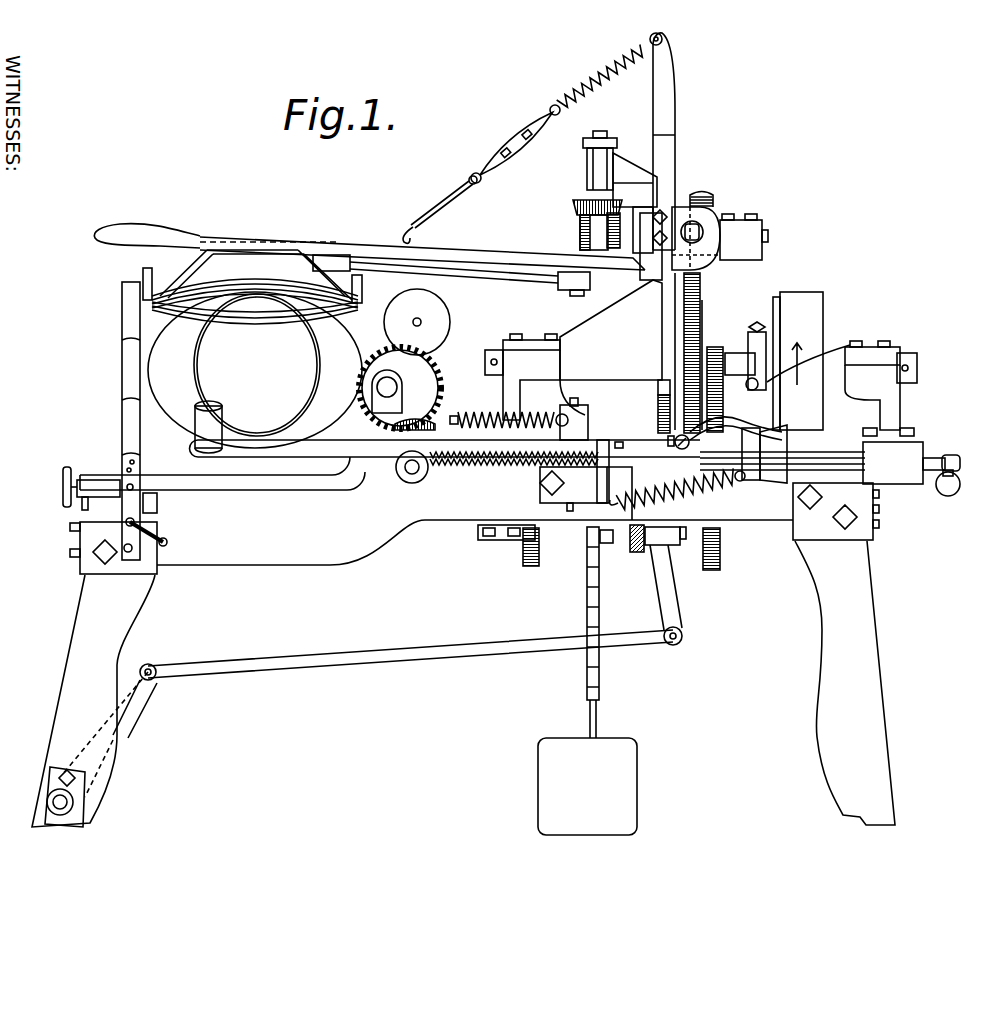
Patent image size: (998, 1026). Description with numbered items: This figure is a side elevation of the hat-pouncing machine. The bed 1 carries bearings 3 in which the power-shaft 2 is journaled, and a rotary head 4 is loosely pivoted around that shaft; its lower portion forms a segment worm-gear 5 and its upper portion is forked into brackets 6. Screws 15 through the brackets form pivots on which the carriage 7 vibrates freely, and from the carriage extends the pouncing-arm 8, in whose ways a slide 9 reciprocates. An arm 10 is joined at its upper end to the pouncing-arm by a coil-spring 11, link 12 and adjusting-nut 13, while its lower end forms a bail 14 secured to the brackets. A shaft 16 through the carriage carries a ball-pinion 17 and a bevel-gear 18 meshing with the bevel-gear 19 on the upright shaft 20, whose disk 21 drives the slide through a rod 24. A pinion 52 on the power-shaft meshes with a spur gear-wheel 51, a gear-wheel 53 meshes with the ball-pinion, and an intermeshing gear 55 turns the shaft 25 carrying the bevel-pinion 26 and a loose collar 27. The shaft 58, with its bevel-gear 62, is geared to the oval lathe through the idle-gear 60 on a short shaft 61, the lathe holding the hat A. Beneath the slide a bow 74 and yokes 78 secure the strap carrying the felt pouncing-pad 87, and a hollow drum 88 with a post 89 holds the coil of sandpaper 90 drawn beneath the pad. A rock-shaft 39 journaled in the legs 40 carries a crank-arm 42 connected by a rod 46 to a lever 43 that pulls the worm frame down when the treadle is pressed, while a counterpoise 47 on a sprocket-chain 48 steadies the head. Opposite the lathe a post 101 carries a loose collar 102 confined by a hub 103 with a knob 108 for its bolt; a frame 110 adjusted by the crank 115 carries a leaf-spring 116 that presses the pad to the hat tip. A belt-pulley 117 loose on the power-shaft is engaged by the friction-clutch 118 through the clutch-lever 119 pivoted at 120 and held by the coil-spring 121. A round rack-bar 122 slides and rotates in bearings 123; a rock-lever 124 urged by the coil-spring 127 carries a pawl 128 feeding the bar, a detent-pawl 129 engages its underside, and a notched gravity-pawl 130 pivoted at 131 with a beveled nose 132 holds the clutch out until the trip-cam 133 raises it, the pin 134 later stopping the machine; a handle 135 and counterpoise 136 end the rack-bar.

The bed 1 is at (482, 641).
The power-shaft 2 is at (740, 363).
The bearings 3 is at (886, 347).
The rotary head 4 is at (613, 295).
The segment worm-gear 5 is at (656, 405).
The brackets 6 is at (696, 238).
The carriage 7 is at (620, 165).
The pouncing-arm 8 is at (450, 252).
The slide 9 is at (340, 255).
The arm 10 is at (676, 118).
The coil-spring 11 is at (588, 96).
The link 12 is at (445, 196).
The adjusting-nut 13 is at (520, 140).
The bail 14 is at (676, 152).
The screws 15 is at (700, 228).
The shaft 16 is at (768, 236).
The ball-pinion 17 is at (703, 192).
The bevel-gear 18 is at (592, 232).
The bevel-gear 19 is at (575, 204).
The upright shaft 20 is at (600, 155).
The disk 21 is at (613, 283).
The rod 24 is at (497, 279).
The shaft 25 is at (683, 538).
The bevel-pinion 26 is at (632, 550).
The collar 27 is at (662, 534).
The rock-shaft 39 is at (85, 795).
The legs 40 is at (93, 701).
The crank-arm 42 is at (150, 690).
The lever 43 is at (673, 604).
The rod 46 is at (445, 642).
The counterpoise 47 is at (587, 786).
The sprocket-chain 48 is at (587, 595).
The spur gear-wheel 51 is at (720, 550).
The pinion 52 is at (713, 347).
The gear-wheel 53 is at (700, 300).
The gear 55 is at (525, 562).
The shaft 58 is at (410, 475).
The idle-gear 60 is at (415, 382).
The short shaft 61 is at (397, 383).
The bevel-gear 62 is at (441, 417).
The bow 74 is at (205, 254).
The yokes 78 is at (375, 283).
The pouncing-pad 87 is at (255, 293).
The hollow drum 88 is at (417, 322).
The post 89 is at (422, 322).
The sandpaper 90 is at (200, 308).
The post 101 is at (157, 500).
The collar 102 is at (82, 503).
The hub 103 is at (85, 480).
The knob 108 is at (63, 470).
The frame 110 is at (132, 548).
The crank 115 is at (168, 540).
The leaf-spring 116 is at (122, 350).
The belt-pulley 117 is at (815, 285).
The friction-clutch 118 is at (775, 302).
The clutch-lever 119 is at (748, 340).
The pivot 120 is at (823, 352).
The coil-spring 121 is at (710, 487).
The rack-bar 122 is at (382, 458).
The bearings 123 is at (938, 440).
The rock-lever 124 is at (578, 421).
The coil-spring 127 is at (478, 410).
The spring-actuated pawl 128 is at (560, 452).
The detent-pawl 129 is at (540, 483).
The gravity-pawl 130 is at (703, 439).
The pivot 131 is at (668, 438).
The beveled nose 132 is at (795, 428).
The trip-cam 133 is at (790, 470).
The pin 134 is at (617, 441).
The handle 135 is at (195, 415).
The counterpoise 136 is at (953, 492).
The hat A is at (255, 370).